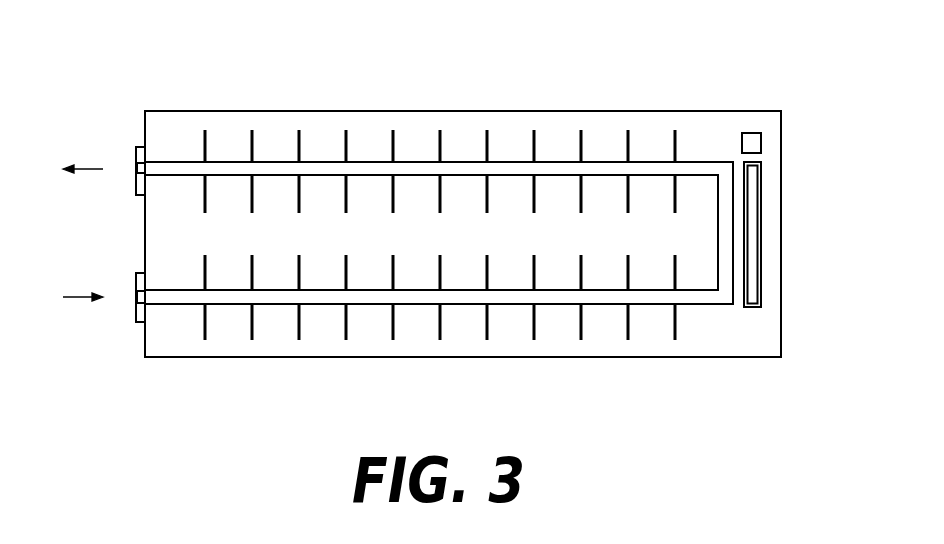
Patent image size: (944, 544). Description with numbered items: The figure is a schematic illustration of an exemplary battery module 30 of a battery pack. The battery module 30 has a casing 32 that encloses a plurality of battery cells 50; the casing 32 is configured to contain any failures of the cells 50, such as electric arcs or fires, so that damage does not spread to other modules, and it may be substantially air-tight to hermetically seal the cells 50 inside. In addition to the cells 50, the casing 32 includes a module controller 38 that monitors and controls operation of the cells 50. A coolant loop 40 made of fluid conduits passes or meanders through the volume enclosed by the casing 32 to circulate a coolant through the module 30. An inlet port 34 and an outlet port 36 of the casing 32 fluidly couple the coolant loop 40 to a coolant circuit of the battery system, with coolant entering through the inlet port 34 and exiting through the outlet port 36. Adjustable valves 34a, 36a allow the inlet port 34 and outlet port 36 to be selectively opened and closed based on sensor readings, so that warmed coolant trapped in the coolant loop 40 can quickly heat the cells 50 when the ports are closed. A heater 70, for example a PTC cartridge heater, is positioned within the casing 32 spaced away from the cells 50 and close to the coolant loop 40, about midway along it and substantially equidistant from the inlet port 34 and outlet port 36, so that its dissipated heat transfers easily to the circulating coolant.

The battery module 30 is at (400, 94).
The casing 32 is at (597, 110).
The inlet port 34 is at (136, 318).
The adjustable valve 34a is at (136, 296).
The outlet port 36 is at (136, 150).
The adjustable valve 36a is at (132, 173).
The module controller 38 is at (761, 143).
The coolant loop 40 is at (733, 304).
The battery cells 50 is at (440, 327).
The heater 70 is at (761, 213).